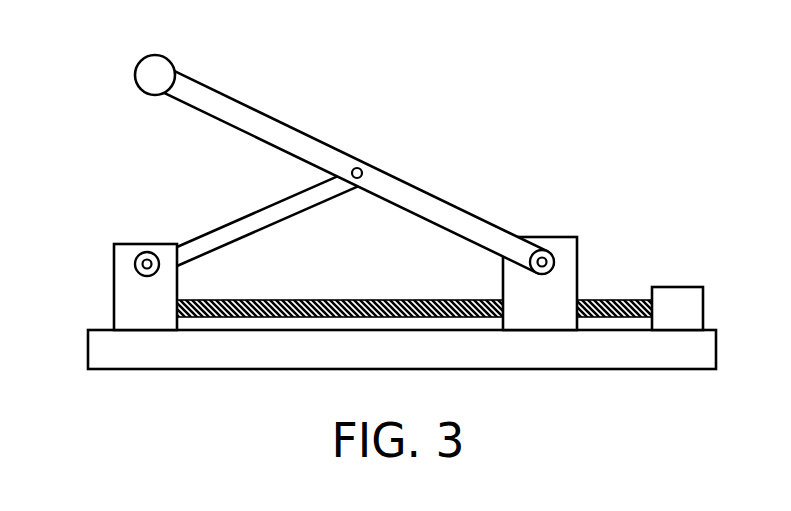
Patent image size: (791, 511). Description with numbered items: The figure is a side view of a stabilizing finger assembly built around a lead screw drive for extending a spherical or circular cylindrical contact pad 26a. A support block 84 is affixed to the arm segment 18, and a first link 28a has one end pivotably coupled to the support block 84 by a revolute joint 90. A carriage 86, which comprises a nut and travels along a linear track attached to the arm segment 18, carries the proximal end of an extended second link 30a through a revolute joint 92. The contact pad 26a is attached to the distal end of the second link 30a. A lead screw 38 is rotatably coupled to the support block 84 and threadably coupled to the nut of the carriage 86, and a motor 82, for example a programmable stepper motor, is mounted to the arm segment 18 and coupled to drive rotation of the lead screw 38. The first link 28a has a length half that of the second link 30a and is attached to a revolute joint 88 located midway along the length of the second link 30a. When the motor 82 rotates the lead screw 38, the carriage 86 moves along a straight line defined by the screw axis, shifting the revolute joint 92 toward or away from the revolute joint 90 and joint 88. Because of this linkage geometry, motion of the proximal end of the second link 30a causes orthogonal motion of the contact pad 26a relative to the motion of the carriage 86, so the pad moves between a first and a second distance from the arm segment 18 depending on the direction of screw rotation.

The arm segment 18 is at (605, 369).
The spherical or circular cylindrical contact pad 26a is at (155, 55).
The first link 28a is at (228, 224).
The extended second link 30a is at (435, 197).
The lead screw 38 is at (335, 300).
The motor 82 is at (675, 287).
The support block 84 is at (113, 285).
The carriage 86 is at (578, 272).
The revolute joint 88 is at (361, 168).
The revolute joint 90 is at (142, 256).
The revolute joint 92 is at (545, 252).